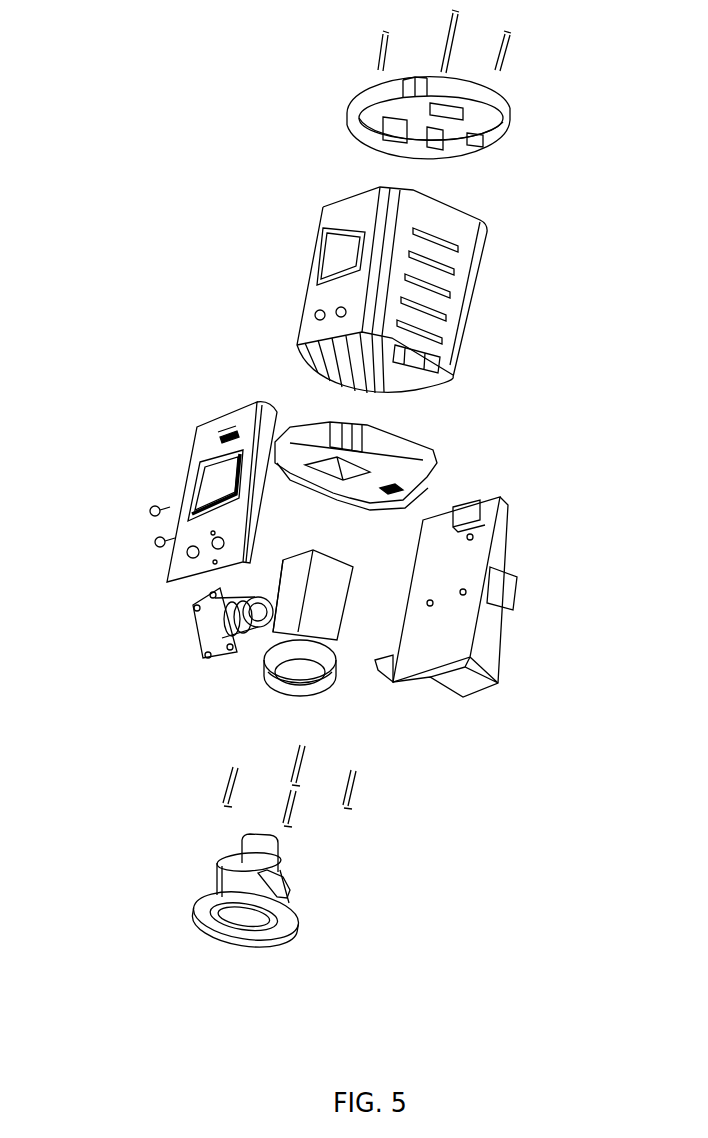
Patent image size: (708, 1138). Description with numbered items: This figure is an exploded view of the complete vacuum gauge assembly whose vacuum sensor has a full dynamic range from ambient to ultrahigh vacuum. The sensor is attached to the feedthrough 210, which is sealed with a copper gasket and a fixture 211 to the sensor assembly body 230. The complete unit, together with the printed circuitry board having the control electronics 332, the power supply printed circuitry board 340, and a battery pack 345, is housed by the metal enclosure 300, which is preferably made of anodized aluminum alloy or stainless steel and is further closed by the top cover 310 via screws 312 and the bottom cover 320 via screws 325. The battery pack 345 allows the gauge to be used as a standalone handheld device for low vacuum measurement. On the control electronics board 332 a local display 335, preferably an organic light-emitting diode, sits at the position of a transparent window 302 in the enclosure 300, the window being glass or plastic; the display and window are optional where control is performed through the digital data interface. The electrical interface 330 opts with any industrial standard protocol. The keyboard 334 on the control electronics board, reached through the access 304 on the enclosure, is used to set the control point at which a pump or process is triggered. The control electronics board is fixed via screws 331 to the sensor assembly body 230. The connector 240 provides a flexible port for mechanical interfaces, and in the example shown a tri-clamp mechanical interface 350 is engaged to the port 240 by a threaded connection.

The feedthrough 210 is at (171, 651).
The fixture 211 is at (200, 655).
The sensor assembly body 230 is at (323, 618).
The connector 240 is at (297, 652).
The metal enclosure 300 is at (387, 284).
The transparent window 302 is at (335, 260).
The keyboard access 304 is at (313, 315).
The top cover 310 is at (493, 110).
The screws 312 is at (505, 47).
The bottom cover 320 is at (407, 452).
The screws 325 is at (353, 790).
The electrical interface 330 is at (149, 456).
The screws 331 is at (147, 507).
The printed circuitry board having the control electronics 332 is at (207, 443).
The keyboard 334 is at (188, 555).
The local display 335 is at (198, 492).
The power supply printed circuitry board 340 is at (505, 569).
The battery pack 345 is at (498, 595).
The tri-clamp mechanical interface 350 is at (273, 882).